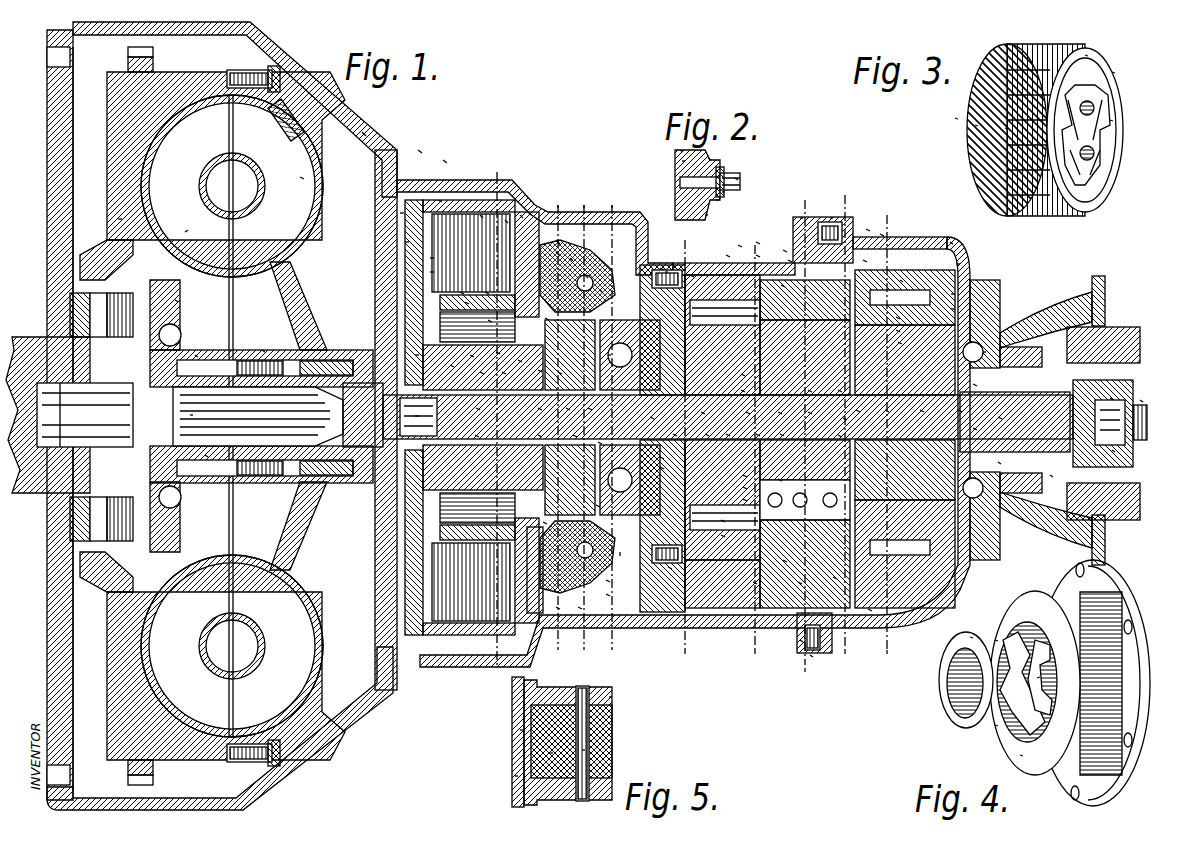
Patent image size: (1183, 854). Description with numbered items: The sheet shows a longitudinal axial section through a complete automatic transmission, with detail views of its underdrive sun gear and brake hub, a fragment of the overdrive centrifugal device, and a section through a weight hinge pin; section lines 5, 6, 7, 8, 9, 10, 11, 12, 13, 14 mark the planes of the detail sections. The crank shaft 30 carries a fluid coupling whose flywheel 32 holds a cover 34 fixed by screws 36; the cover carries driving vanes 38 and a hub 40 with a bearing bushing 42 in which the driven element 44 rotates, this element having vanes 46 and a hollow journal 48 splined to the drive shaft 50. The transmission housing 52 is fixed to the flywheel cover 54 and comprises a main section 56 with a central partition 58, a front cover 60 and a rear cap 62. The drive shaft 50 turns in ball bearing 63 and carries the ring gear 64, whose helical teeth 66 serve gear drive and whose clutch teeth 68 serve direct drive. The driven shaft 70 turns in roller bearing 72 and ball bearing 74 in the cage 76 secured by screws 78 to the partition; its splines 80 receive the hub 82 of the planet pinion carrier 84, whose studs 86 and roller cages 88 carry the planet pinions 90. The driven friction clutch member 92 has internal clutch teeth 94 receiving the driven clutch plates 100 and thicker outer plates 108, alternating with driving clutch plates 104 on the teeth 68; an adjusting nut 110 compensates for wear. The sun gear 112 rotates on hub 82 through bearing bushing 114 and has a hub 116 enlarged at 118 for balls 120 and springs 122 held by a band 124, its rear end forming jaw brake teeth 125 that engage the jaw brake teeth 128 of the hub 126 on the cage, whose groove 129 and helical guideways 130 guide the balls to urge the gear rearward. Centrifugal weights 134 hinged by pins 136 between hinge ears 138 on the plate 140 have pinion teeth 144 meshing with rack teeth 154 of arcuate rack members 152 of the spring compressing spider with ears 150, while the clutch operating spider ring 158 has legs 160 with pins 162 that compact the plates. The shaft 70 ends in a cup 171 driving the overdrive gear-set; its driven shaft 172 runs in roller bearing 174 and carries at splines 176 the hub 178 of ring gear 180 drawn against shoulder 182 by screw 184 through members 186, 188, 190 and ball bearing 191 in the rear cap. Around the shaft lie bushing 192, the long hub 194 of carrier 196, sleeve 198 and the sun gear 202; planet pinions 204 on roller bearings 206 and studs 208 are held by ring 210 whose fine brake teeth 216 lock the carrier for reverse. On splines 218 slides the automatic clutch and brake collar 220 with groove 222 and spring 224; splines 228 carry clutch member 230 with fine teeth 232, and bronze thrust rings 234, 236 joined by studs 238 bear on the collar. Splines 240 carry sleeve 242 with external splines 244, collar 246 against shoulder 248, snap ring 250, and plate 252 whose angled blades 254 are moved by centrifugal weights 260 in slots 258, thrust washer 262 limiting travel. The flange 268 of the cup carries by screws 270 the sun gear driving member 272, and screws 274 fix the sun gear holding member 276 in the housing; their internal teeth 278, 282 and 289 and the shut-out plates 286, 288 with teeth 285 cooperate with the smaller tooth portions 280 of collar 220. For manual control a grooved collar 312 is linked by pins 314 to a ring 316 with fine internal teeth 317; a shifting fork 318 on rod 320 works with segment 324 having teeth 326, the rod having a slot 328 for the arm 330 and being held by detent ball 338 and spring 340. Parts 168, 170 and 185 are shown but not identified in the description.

In FIG. 1, the section line 5 is at (628, 550).
In FIG. 1, the section line 6 is at (506, 655).
In FIG. 1, the section line 7 is at (566, 650).
In FIG. 1, the section line 8 is at (592, 650).
In FIG. 1, the section line 9 is at (620, 650).
In FIG. 1, the section line 10 is at (695, 248).
In FIG. 1, the section line 11 is at (765, 252).
In FIG. 1, the section line 12 is at (815, 200).
In FIG. 1, the section line 13 is at (855, 202).
In FIG. 1, the section line 14 is at (897, 218).
In FIG. 1, the crank shaft 30 is at (14, 350).
In FIG. 1, the flywheel 32 is at (118, 219).
In FIG. 1, the cover 34 is at (262, 64).
In FIG. 1, the screws 36 is at (286, 109).
In FIG. 1, the driving vanes 38 is at (303, 178).
In FIG. 1, the hub 40 is at (262, 350).
In FIG. 1, the bearing bushing 42 is at (195, 355).
In FIG. 1, the driven element 44 is at (175, 300).
In FIG. 1, the vanes 46 is at (185, 232).
In FIG. 1, the central hollow journal 48 is at (205, 455).
In FIG. 1, the drive shaft 50 is at (190, 415).
In FIG. 1, the transmission housing 52 is at (445, 160).
In FIG. 1, the flywheel cover 54 is at (365, 133).
In FIG. 1, the main section 56 is at (420, 150).
In FIG. 1, the central partition 58 is at (660, 268).
In FIG. 1, the front cover 60 is at (400, 213).
In FIG. 1, the rear cap 62 is at (950, 242).
In FIG. 1, the ball bearing 63 is at (406, 355).
In FIG. 1, the ring gear 64 is at (430, 272).
In FIG. 1, the helical gear teeth 66 is at (479, 286).
In FIG. 1, the external clutch teeth 68 is at (430, 258).
In FIG. 1, the driven shaft 70 is at (470, 406).
In FIG. 1, the roller bearing 72 is at (408, 417).
In FIG. 1, the ball bearing 74 is at (618, 357).
In FIG. 4, the cage 76 is at (1020, 755).
In FIG. 1, the screws 78 is at (665, 272).
In FIG. 1, the external splines 80 is at (468, 433).
In FIG. 1, the hub 82 is at (478, 388).
In FIG. 1, the planet pinion carrier 84 is at (443, 363).
In FIG. 1, the bearing studs 86 is at (481, 318).
In FIG. 1, the roller cages 88 is at (459, 297).
In FIG. 1, the planet pinions 90 is at (464, 353).
In FIG. 1, the driven friction clutch member 92 is at (505, 220).
In FIG. 5, the driven friction clutch member 92 is at (515, 776).
In FIG. 1, the internal clutch teeth 94 is at (520, 215).
In FIG. 1, the driven clutch plates 100 is at (480, 215).
In FIG. 1, the driving clutch plates 104 is at (456, 286).
In FIG. 1, the outer driven clutch plates 108 is at (405, 242).
In FIG. 1, the adjusting nut 110 is at (440, 200).
In FIG. 1, the sun gear 112 is at (488, 350).
In FIG. 3, the sun gear 112 is at (955, 118).
In FIG. 1, the bearing bushing 114 is at (494, 369).
In FIG. 1, the hub 116 is at (510, 358).
In FIG. 3, the hub 116 is at (1005, 128).
In FIG. 3, the enlargement 118 is at (1085, 55).
In FIG. 1, the balls 120 is at (550, 369).
In FIG. 1, the springs 122 is at (530, 367).
In FIG. 1, the band 124 is at (537, 316).
In FIG. 3, the band 124 is at (1112, 72).
In FIG. 3, the jaw brake teeth 125 is at (1110, 120).
In FIG. 1, the hub 126 is at (558, 406).
In FIG. 4, the hub 126 is at (995, 640).
In FIG. 1, the jaw brake teeth 128 is at (580, 406).
In FIG. 4, the jaw brake teeth 128 is at (1040, 677).
In FIG. 1, the round bottomed groove 129 is at (530, 406).
In FIG. 4, the round bottomed groove 129 is at (970, 637).
In FIG. 1, the guideways 130 is at (530, 433).
In FIG. 4, the guideways 130 is at (995, 725).
In FIG. 1, the centrifugal clutch operating weights 134 is at (570, 258).
In FIG. 5, the centrifugal clutch operating weights 134 is at (550, 753).
In FIG. 1, the pins 136 is at (585, 275).
In FIG. 5, the pins 136 is at (585, 750).
In FIG. 1, the hinge ears 138 is at (548, 247).
In FIG. 5, the hinge ears 138 is at (612, 782).
In FIG. 1, the plate 140 is at (548, 234).
In FIG. 5, the plate 140 is at (520, 730).
In FIG. 1, the pinion teeth 144 is at (600, 290).
In FIG. 1, the ears 150 is at (598, 578).
In FIG. 1, the arcuate rack members 152 is at (588, 503).
In FIG. 1, the rack teeth 154 is at (598, 592).
In FIG. 1, the ring 158 is at (535, 520).
In FIG. 1, the legs 160 is at (570, 605).
In FIG. 1, the pin 162 is at (548, 605).
In FIG. 1, the shaft 168 is at (565, 433).
In FIG. 3, the gear teeth 170 is at (975, 125).
In FIG. 1, the cup 171 is at (718, 253).
In FIG. 1, the driven shaft 172 is at (590, 440).
In FIG. 1, the roller bearing 174 is at (642, 415).
In FIG. 1, the splines 176 is at (990, 415).
In FIG. 1, the hub 178 is at (965, 382).
In FIG. 1, the ring gear 180 is at (900, 280).
In FIG. 1, the shoulder 182 is at (965, 426).
In FIG. 1, the screw 184 is at (1110, 398).
In FIG. 1, the washer 185 is at (1140, 400).
In FIG. 1, the intermediate member 186 is at (1112, 450).
In FIG. 1, the intermediate member 188 is at (1050, 475).
In FIG. 1, the intermediate member 190 is at (998, 462).
In FIG. 1, the ball bearing 191 is at (974, 352).
In FIG. 1, the long bearing bushing 192 is at (912, 408).
In FIG. 1, the long hub 194 is at (950, 408).
In FIG. 1, the planet pinion carrier 196 is at (955, 294).
In FIG. 1, the second long bearing sleeve 198 is at (830, 433).
In FIG. 1, the sun gear 202 is at (877, 408).
In FIG. 1, the planet pinions 204 is at (890, 340).
In FIG. 1, the roller bearings 206 is at (863, 351).
In FIG. 1, the studs 208 is at (955, 309).
In FIG. 1, the ring 210 is at (960, 264).
In FIG. 1, the fine brake teeth 216 is at (872, 232).
In FIG. 1, the long external splines 218 is at (848, 408).
In FIG. 1, the automatic clutch and brake collar 220 is at (800, 410).
In FIG. 1, the deep groove 222 is at (830, 388).
In FIG. 1, the spring 224 is at (800, 388).
In FIG. 1, the external splines 228 is at (770, 410).
In FIG. 1, the clutch member 230 is at (772, 432).
In FIG. 1, the fine clutch teeth 232 is at (735, 497).
In FIG. 1, the end-thrust ring 234 is at (735, 473).
In FIG. 2, the end-thrust ring 234 is at (722, 192).
In FIG. 1, the end-thrust ring 236 is at (735, 485).
In FIG. 2, the studs 238 is at (735, 178).
In FIG. 1, the splines 240 is at (748, 432).
In FIG. 1, the sleeve 242 is at (718, 432).
In FIG. 1, the external splines 244 is at (697, 432).
In FIG. 1, the collar 246 is at (652, 465).
In FIG. 2, the collar 246 is at (680, 150).
In FIG. 1, the shoulder 248 is at (652, 455).
In FIG. 1, the snap ring 250 is at (665, 432).
In FIG. 1, the plate 252 is at (733, 388).
In FIG. 2, the plate 252 is at (716, 200).
In FIG. 2, the blades 254 is at (682, 161).
In FIG. 1, the slots 258 is at (733, 372).
In FIG. 2, the slots 258 is at (708, 158).
In FIG. 1, the centrifugal weights 260 is at (693, 410).
In FIG. 2, the centrifugal weights 260 is at (705, 215).
In FIG. 1, the end-thrust washer 262 is at (738, 410).
In FIG. 1, the flange 268 is at (748, 253).
In FIG. 1, the screws 270 is at (730, 243).
In FIG. 1, the sun gear driving member 272 is at (748, 240).
In FIG. 1, the screws 274 is at (800, 218).
In FIG. 1, the sun gear holding member 276 is at (830, 218).
In FIG. 1, the internal teeth 278 is at (775, 248).
In FIG. 1, the smaller portions 280 is at (773, 283).
In FIG. 1, the internal teeth 282 is at (888, 328).
In FIG. 1, the internal teeth 285 is at (888, 315).
In FIG. 1, the shut-out plate 286 is at (780, 258).
In FIG. 1, the shut-out plate 288 is at (855, 258).
In FIG. 1, the internal teeth 289 is at (858, 227).
In FIG. 1, the grooved collar 312 is at (690, 275).
In FIG. 1, the pins 314 is at (713, 518).
In FIG. 1, the ring 316 is at (770, 477).
In FIG. 1, the fine internal teeth 317 is at (776, 558).
In FIG. 1, the shifting fork 318 is at (713, 533).
In FIG. 1, the shifting rod 320 is at (660, 565).
In FIG. 1, the segment 324 is at (860, 607).
In FIG. 1, the fine teeth 326 is at (825, 575).
In FIG. 1, the vertical slot 328 is at (790, 580).
In FIG. 1, the arm 330 is at (745, 580).
In FIG. 1, the detent ball 338 is at (800, 640).
In FIG. 1, the spring 340 is at (810, 655).